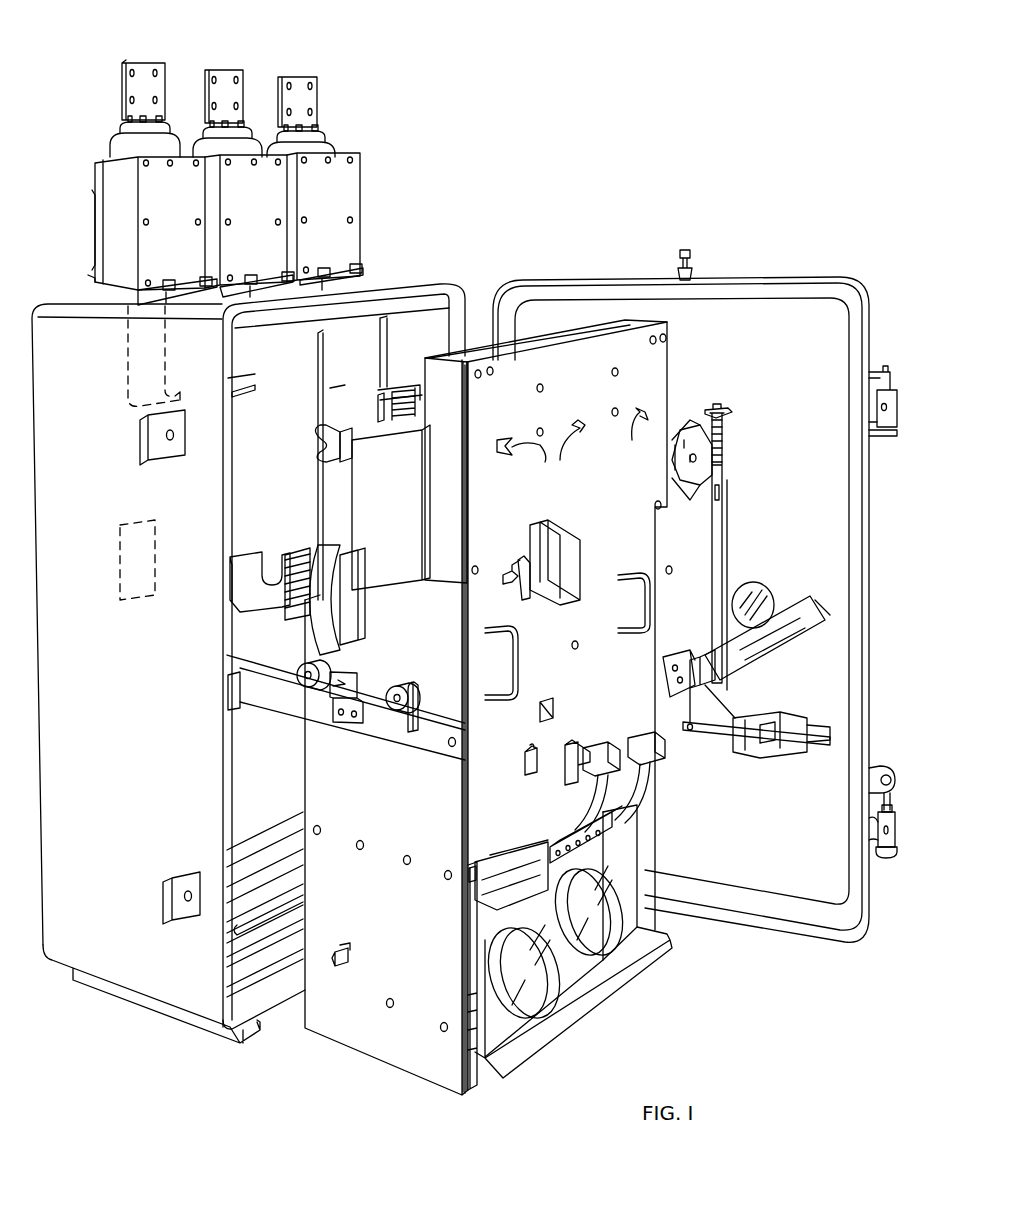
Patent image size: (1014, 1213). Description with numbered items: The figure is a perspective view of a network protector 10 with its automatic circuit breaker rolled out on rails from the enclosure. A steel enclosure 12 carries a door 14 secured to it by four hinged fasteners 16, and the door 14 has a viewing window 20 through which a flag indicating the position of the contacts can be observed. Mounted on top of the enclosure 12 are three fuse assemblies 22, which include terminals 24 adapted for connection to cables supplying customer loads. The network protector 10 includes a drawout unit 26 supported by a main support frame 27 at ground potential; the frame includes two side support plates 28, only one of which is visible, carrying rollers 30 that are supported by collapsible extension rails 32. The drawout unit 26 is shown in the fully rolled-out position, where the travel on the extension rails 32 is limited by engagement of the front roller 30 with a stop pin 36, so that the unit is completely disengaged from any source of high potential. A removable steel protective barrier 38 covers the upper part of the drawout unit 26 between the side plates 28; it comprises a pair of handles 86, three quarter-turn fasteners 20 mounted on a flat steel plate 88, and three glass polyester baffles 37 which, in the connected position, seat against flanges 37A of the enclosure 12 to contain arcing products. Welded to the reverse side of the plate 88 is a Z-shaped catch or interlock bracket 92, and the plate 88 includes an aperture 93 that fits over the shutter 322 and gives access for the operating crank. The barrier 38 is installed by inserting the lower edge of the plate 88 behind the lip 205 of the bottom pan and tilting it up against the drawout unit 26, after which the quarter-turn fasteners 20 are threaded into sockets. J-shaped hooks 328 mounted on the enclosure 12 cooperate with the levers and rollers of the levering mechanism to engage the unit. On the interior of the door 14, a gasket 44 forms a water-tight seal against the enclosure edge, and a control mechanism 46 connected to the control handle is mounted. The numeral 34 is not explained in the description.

The network protector 10 is at (382, 42).
The steel enclosure 12 is at (45, 955).
The door 14 is at (570, 281).
The hinged fasteners 16 is at (895, 388).
The quarter-turn fasteners 20 is at (785, 583).
The fuse assemblies 22 is at (183, 225).
The terminals 24 is at (220, 70).
The drawout unit 26 is at (516, 1112).
The main support frame 27 is at (445, 1090).
The side support plates 28 is at (342, 1043).
The rollers 30 is at (405, 685).
The collapsible extension rails 32 is at (275, 700).
The bracket 34 is at (337, 690).
The stop pin 36 is at (420, 712).
The glass polyester baffles 37 is at (450, 343).
The flanges 37A is at (236, 372).
The removable steel protective barrier 38 is at (482, 390).
The gasket 44 is at (860, 908).
The control mechanism 46 is at (725, 503).
The handles 86 is at (630, 636).
The flat steel plate 88 is at (660, 360).
The Z-shaped catch or interlock bracket 92 is at (518, 560).
The aperture 93 is at (530, 600).
The lip 205 is at (465, 868).
The shutter 322 is at (578, 558).
The J-shaped hooks 328 is at (250, 568).